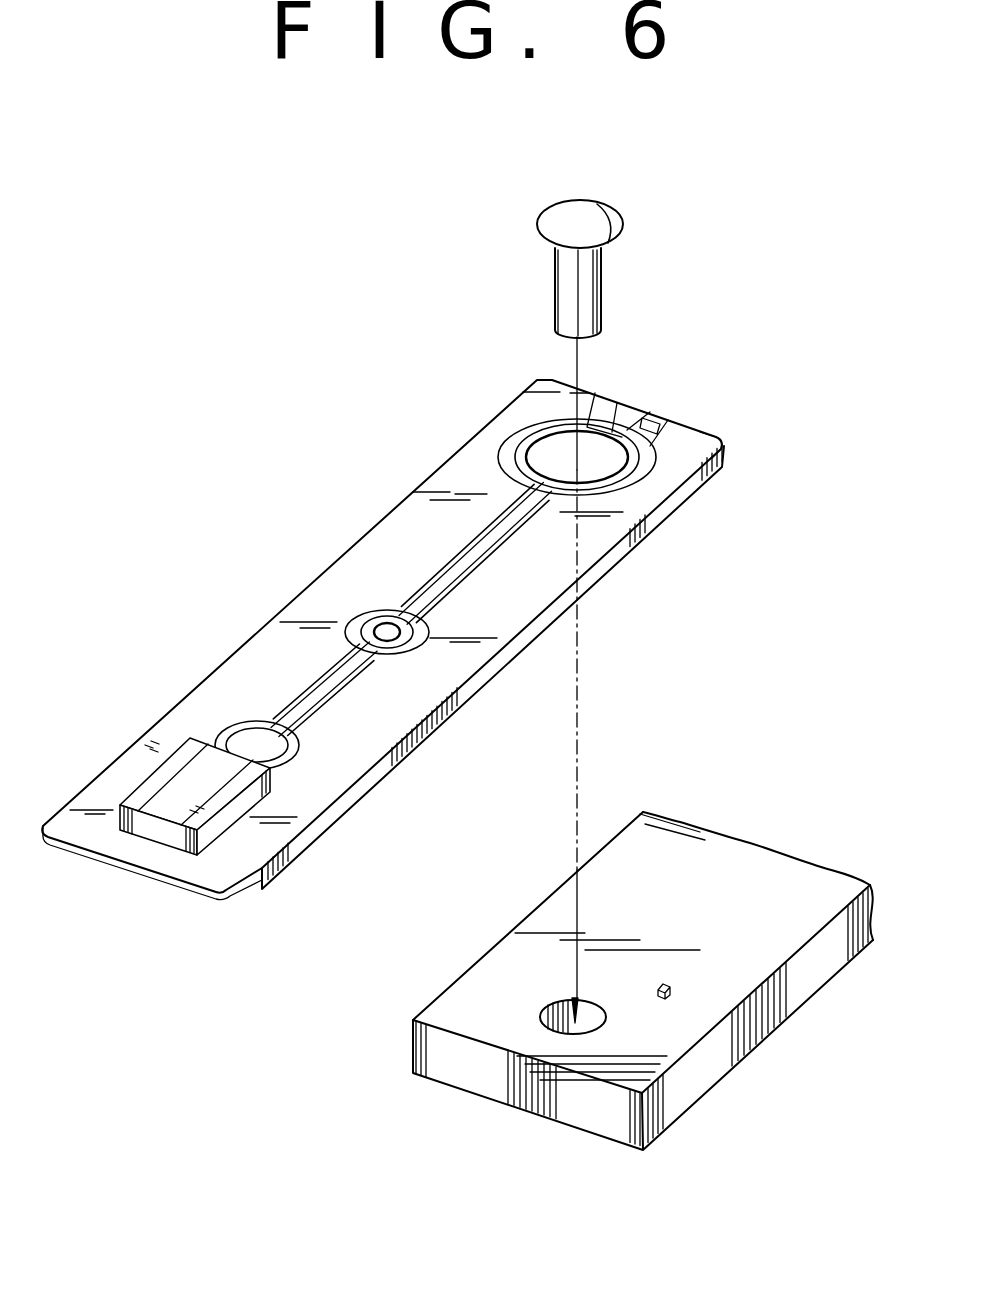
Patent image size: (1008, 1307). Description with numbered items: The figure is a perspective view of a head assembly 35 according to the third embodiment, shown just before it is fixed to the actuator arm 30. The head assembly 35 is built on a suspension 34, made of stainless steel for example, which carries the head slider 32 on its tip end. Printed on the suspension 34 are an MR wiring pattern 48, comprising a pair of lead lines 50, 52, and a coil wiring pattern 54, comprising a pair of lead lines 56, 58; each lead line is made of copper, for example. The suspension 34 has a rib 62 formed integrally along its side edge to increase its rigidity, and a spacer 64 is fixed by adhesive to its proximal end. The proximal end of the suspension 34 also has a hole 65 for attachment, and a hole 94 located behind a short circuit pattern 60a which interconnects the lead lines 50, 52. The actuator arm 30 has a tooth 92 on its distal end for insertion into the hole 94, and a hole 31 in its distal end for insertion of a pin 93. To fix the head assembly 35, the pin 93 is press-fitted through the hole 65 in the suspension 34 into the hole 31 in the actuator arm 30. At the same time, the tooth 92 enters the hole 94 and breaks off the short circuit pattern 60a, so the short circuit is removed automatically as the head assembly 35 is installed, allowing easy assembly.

The actuator arm 30 is at (763, 873).
The hole 31 is at (557, 1028).
The head slider 32 is at (180, 792).
The suspension 34 is at (422, 490).
The head assembly 35 is at (440, 452).
The MR wiring pattern 48 is at (332, 706).
The lead line 50 is at (455, 580).
The lead line 52 is at (507, 547).
The coil wiring pattern 54 is at (302, 683).
The lead line 56 is at (450, 557).
The lead line 58 is at (420, 585).
The short circuit pattern 60a is at (652, 420).
The rib 62 is at (300, 848).
The spacer 64 is at (700, 490).
The hole 65 is at (550, 455).
The tooth 92 is at (662, 982).
The pin 93 is at (556, 226).
The hole 94 is at (720, 448).